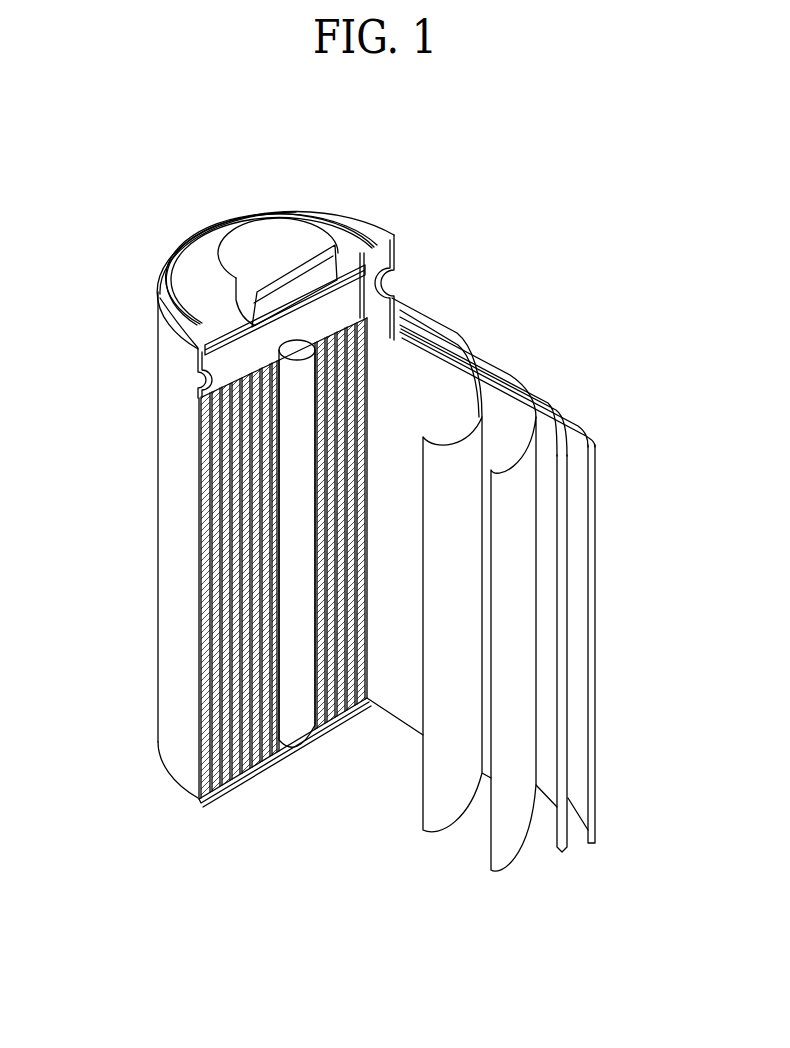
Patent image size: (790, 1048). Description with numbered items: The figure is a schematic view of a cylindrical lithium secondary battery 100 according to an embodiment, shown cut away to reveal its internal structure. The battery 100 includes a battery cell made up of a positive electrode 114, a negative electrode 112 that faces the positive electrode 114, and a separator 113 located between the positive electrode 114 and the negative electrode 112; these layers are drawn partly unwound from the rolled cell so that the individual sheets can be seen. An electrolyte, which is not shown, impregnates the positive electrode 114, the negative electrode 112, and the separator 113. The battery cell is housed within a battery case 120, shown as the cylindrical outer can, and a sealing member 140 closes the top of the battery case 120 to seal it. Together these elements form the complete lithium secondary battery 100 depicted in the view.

The lithium secondary battery 100 is at (382, 200).
The negative electrode 112 is at (590, 427).
The separator 113 is at (420, 338).
The positive electrode 114 is at (503, 393).
The battery case 120 is at (172, 551).
The sealing member 140 is at (262, 252).